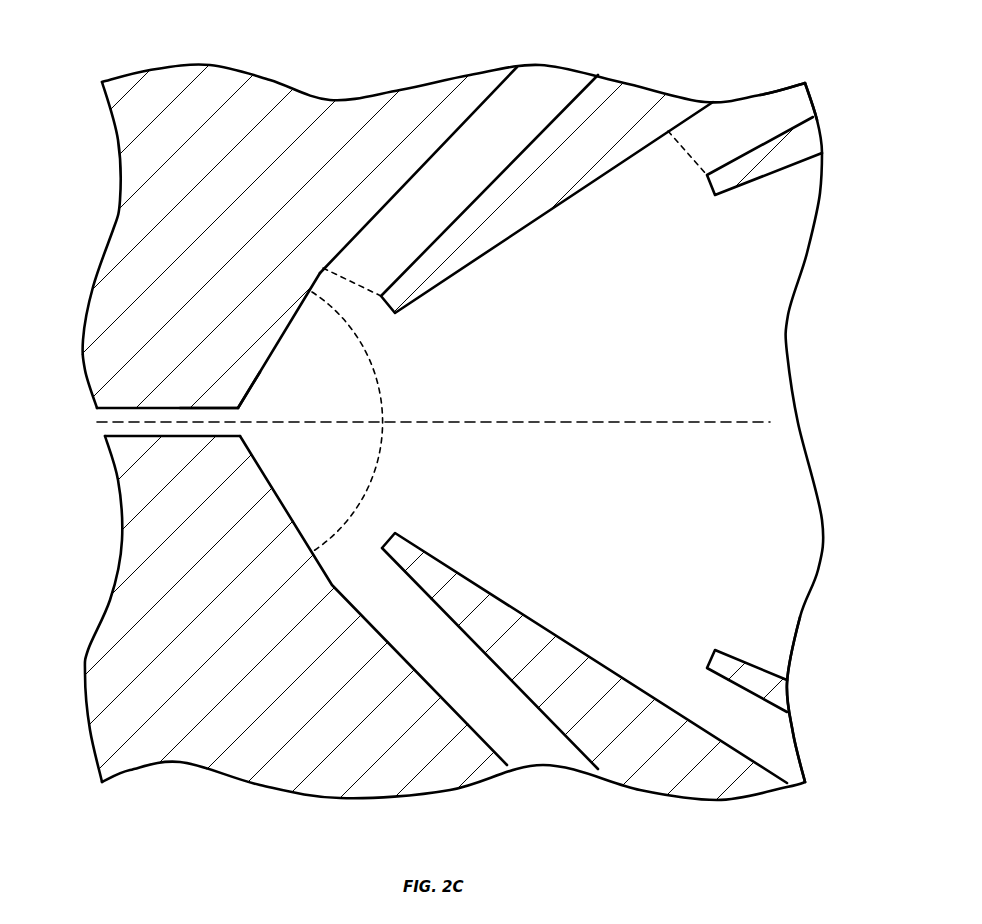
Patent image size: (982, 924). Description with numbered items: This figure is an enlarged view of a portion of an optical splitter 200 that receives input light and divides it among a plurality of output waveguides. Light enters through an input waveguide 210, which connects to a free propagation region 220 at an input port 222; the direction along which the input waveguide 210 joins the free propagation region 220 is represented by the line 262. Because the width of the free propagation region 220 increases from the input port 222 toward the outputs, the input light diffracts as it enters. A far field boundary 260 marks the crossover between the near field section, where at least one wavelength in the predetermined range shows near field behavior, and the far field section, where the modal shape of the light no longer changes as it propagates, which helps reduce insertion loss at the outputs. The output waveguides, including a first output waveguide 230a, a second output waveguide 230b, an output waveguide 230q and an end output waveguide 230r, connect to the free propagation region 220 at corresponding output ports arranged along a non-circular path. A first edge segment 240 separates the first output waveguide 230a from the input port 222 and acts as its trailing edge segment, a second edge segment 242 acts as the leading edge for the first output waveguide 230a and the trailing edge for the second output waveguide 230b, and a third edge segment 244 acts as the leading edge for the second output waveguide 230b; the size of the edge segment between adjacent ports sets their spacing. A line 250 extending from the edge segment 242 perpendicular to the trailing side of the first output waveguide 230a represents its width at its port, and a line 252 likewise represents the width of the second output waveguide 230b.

The optical splitter 200 is at (221, 80).
The input waveguide 210 is at (130, 438).
The free propagation region 220 is at (789, 316).
The input port 222 is at (228, 414).
The first output waveguide 230a is at (558, 65).
The second output waveguide 230b is at (808, 92).
The output waveguide 230q is at (795, 736).
The second edge output waveguide 230r is at (543, 767).
The first edge segment 240 is at (320, 283).
The second edge segment 242 is at (398, 295).
The third edge segment 244 is at (723, 172).
The line 250 is at (360, 282).
The line 252 is at (690, 152).
The far field boundary 260 is at (335, 530).
The line 262 is at (769, 421).